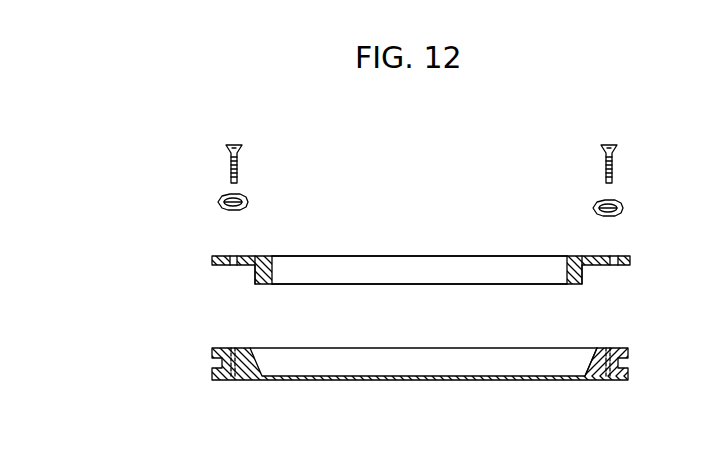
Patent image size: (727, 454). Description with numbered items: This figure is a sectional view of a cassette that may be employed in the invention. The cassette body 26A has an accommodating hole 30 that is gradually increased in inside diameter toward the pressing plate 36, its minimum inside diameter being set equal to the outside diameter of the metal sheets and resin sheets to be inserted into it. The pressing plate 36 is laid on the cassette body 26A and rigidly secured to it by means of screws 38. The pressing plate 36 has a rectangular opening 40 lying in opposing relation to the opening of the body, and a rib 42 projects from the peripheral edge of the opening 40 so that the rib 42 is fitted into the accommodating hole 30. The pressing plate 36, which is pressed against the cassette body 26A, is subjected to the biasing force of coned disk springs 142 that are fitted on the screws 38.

The cassette body 26A is at (597, 367).
The accommodating hole 30 is at (590, 360).
The pressing plate 36 is at (442, 287).
The screw 38 is at (230, 167).
The rectangular opening 40 is at (424, 285).
The rib 42 is at (584, 284).
The coned disk spring 142 is at (219, 205).